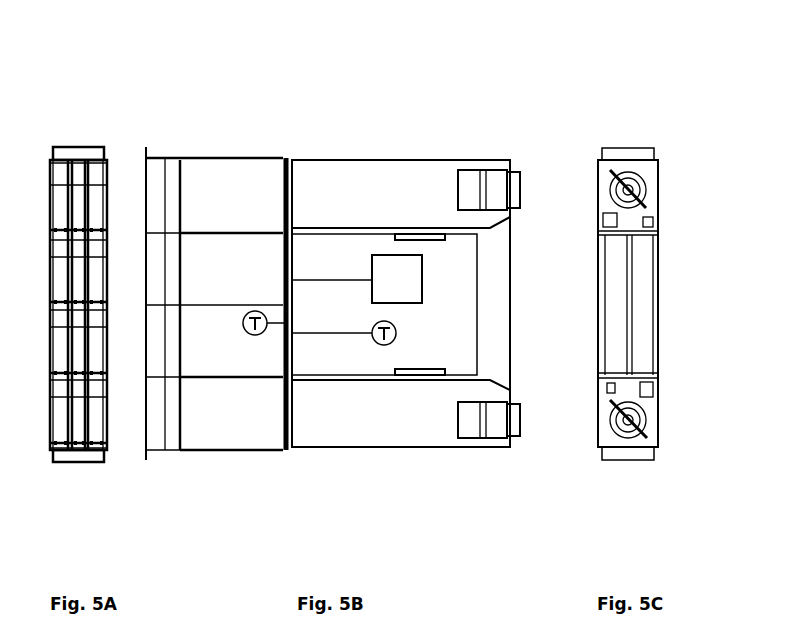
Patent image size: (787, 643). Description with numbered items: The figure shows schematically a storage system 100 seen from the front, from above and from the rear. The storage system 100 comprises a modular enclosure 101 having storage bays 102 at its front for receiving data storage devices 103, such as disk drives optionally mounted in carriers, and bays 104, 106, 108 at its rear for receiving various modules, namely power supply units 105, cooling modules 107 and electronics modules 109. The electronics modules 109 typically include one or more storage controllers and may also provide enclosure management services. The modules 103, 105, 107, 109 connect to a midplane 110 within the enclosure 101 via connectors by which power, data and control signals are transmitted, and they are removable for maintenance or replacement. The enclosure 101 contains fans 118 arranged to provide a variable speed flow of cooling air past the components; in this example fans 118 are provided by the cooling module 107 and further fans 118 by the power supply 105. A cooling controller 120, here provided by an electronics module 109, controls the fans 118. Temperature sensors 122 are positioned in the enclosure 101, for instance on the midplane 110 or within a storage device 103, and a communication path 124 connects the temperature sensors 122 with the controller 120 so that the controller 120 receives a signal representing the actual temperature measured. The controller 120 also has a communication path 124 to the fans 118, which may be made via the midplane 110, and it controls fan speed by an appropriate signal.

In FIG. 5B, the storage system 100 is at (380, 29).
In FIG. 5A, the enclosure 101 is at (160, 474).
In FIG. 5C, the enclosure 101 is at (664, 478).
In FIG. 5A, the storage bays 102 is at (60, 198).
In FIG. 5B, the storage bays 102 is at (190, 240).
In FIG. 5B, the data storage devices 103 is at (262, 240).
In FIG. 5B, the bay 104 is at (460, 158).
In FIG. 5C, the bay 104 is at (597, 167).
In FIG. 5B, the power supply unit 105 is at (382, 178).
In FIG. 5C, the power supply unit 105 is at (650, 172).
In FIG. 5B, the bay 106 is at (430, 450).
In FIG. 5C, the bay 106 is at (607, 430).
In FIG. 5B, the cooling module 107 is at (378, 420).
In FIG. 5C, the cooling module 107 is at (650, 405).
In FIG. 5B, the bay 108 is at (511, 287).
In FIG. 5C, the bay 108 is at (658, 340).
In FIG. 5B, the electronics module 109 is at (455, 347).
In FIG. 5C, the electronics module 109 is at (612, 290).
In FIG. 5B, the midplane 110 is at (290, 400).
In FIG. 5B, the fans 118 is at (497, 178).
In FIG. 5B, the cooling controller 120 is at (400, 263).
In FIG. 5B, the temperature sensors 122 is at (255, 336).
In FIG. 5B, the communication path 124 is at (343, 333).